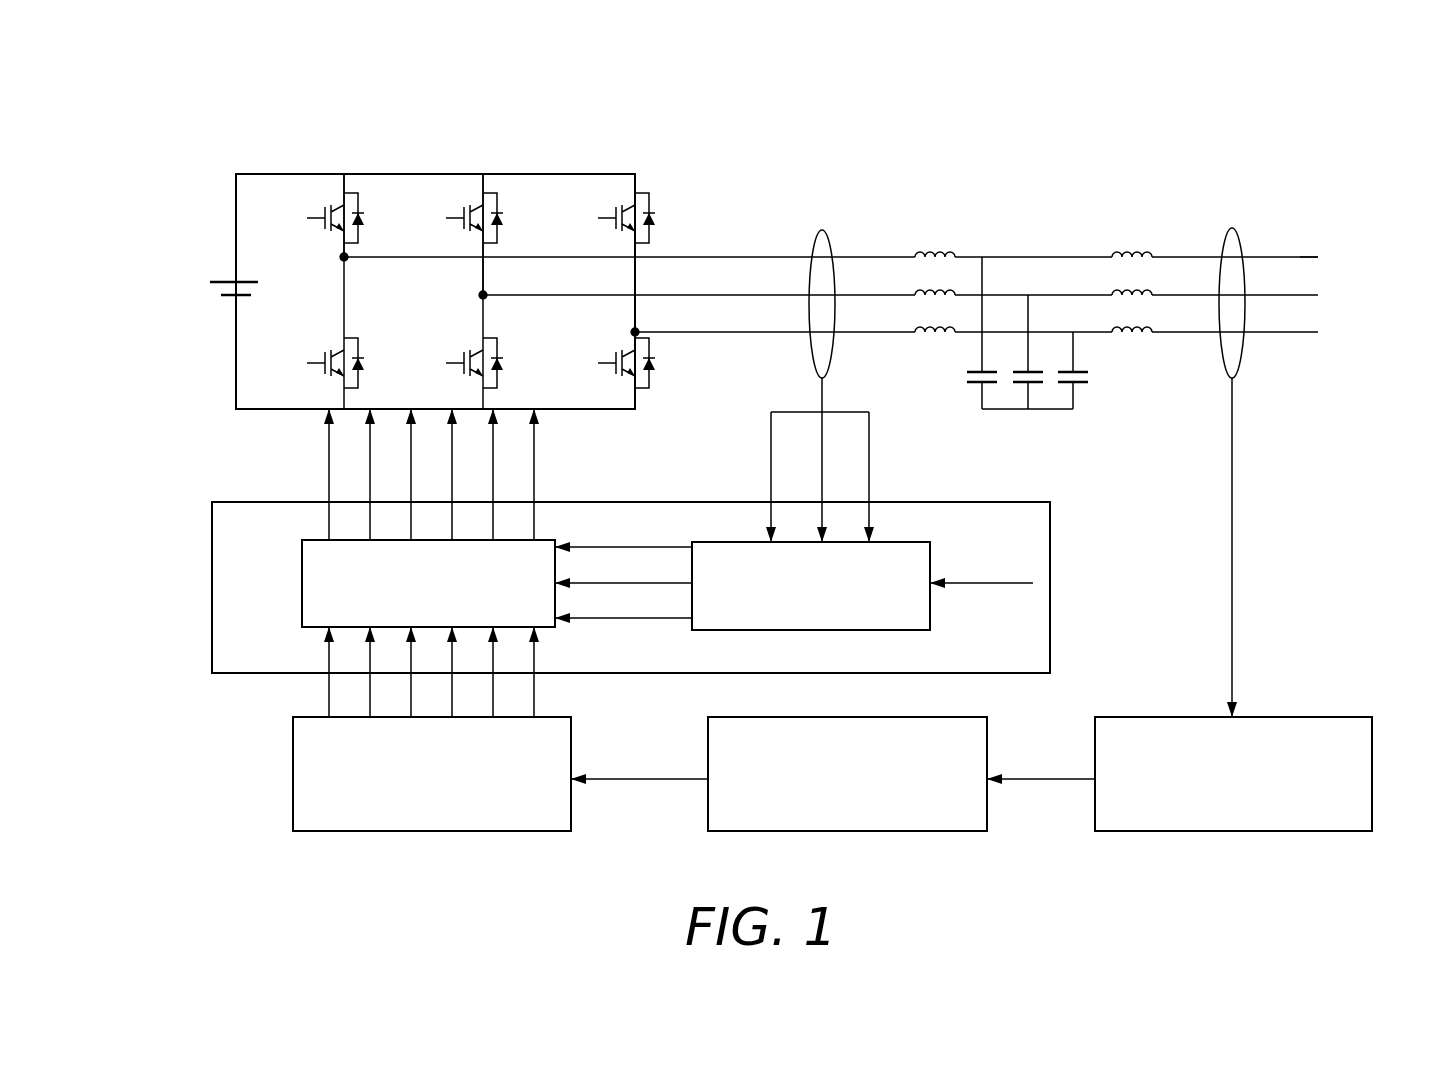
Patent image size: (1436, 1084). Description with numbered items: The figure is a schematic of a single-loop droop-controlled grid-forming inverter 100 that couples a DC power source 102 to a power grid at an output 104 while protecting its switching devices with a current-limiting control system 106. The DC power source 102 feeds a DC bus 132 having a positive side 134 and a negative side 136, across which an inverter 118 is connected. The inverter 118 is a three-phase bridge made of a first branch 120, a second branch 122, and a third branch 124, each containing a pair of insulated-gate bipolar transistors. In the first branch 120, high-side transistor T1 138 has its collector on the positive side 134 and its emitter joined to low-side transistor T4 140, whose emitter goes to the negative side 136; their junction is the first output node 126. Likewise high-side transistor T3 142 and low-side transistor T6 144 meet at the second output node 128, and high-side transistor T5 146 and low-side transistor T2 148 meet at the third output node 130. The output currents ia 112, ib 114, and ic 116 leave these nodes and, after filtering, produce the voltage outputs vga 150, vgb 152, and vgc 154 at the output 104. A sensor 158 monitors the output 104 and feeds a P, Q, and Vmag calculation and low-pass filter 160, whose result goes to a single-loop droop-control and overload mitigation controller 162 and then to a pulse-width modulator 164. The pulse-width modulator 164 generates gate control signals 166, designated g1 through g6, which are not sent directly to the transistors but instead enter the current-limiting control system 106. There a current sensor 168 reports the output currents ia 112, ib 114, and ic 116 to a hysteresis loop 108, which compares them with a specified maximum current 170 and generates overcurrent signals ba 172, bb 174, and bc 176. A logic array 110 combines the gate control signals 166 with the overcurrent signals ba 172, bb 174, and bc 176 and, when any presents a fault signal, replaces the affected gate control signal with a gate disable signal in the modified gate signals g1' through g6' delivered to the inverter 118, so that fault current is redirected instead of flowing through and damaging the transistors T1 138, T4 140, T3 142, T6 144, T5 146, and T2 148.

The single-loop droop-controlled grid-forming inverter 100 is at (168, 130).
The DC power source 102 is at (160, 270).
The output 104 is at (1326, 356).
The current-limiting control system 106 is at (631, 587).
The hysteresis loop 108 is at (811, 586).
The logic array 110 is at (428, 583).
The output current ia 112 is at (762, 232).
The output current ib 114 is at (762, 270).
The output current ic 116 is at (762, 305).
The inverter 118 is at (668, 173).
The first branch 120 is at (344, 174).
The second branch 122 is at (483, 174).
The third branch 124 is at (635, 174).
The first output node 126 is at (338, 253).
The second output node 128 is at (478, 291).
The third output node 130 is at (630, 328).
The DC bus 132 is at (236, 203).
The positive side 134 is at (222, 242).
The negative side 136 is at (223, 331).
The high-side transistor T1 138 is at (331, 204).
The low-side transistor T4 140 is at (331, 377).
The high-side transistor T3 142 is at (470, 204).
The low-side transistor T6 144 is at (470, 377).
The high-side transistor T5 146 is at (622, 204).
The low-side transistor T2 148 is at (622, 377).
The voltage output vga 150 is at (1316, 237).
The voltage output vgb 152 is at (1316, 275).
The voltage output vgc 154 is at (1316, 311).
The sensor 158 is at (1240, 232).
The P, Q, and Vmag calculation and low-pass filter 160 is at (890, 196).
The single-loop droop-control and overload mitigation controller 162 is at (833, 774).
The pulse-width modulator 164 is at (432, 774).
The gate control signals 166 is at (293, 695).
The current sensor 168 is at (1025, 557).
The specified maximum current 170 is at (610, 530).
The overcurrent signal ba 172 is at (608, 560).
The overcurrent signal bb 174 is at (605, 595).
The overcurrent signal bc 176 is at (280, 462).